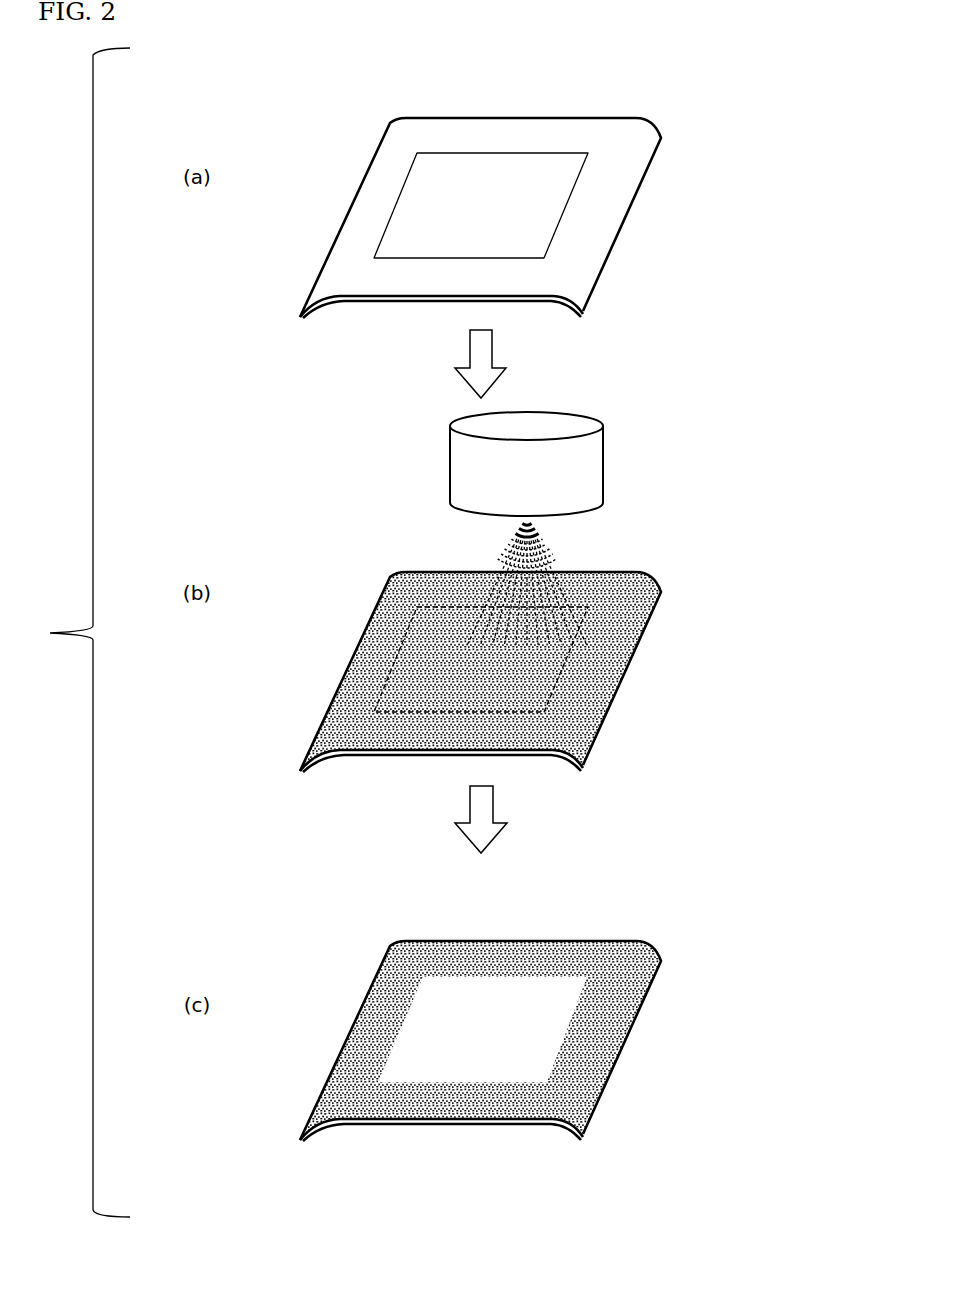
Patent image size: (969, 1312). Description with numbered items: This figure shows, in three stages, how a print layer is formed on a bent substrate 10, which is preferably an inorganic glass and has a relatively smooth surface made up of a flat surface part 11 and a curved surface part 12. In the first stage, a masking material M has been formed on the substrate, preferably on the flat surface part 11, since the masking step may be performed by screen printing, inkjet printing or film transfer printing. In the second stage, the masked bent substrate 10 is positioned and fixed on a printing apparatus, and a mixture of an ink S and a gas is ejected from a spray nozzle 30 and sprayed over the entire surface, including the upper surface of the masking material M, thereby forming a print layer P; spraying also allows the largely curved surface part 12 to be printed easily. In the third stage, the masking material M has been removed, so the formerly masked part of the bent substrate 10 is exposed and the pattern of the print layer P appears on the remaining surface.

The bent substrate 10 is at (494, 593).
The flat surface part 11 is at (505, 137).
The curved surface part 12 is at (335, 265).
The spray nozzle 30 is at (583, 465).
The masking material M is at (448, 177).
The print layer P is at (387, 610).
The ink S is at (547, 553).